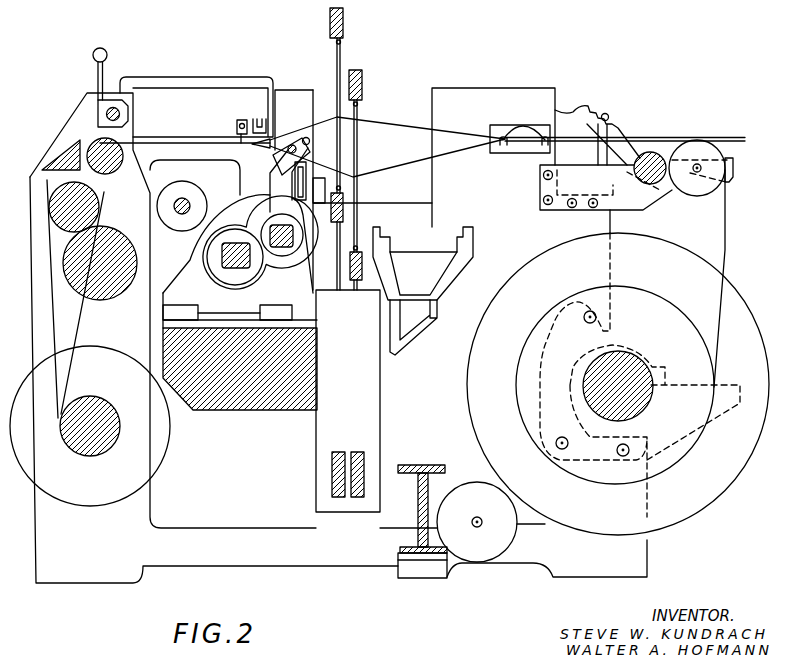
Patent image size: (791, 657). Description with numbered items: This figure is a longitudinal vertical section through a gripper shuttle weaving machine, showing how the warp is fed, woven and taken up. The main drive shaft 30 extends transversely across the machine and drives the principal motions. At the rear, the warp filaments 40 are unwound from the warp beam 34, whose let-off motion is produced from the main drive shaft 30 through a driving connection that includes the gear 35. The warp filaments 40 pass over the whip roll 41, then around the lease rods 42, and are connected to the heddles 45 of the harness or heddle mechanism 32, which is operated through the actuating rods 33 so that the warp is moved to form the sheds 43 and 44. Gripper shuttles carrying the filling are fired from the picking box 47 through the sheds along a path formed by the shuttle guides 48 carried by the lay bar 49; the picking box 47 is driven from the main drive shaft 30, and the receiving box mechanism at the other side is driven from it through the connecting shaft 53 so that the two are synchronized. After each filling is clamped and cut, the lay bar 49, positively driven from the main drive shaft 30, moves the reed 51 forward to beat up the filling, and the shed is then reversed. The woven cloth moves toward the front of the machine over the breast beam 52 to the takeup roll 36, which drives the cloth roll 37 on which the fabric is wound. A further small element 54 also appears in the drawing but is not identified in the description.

The main drive shaft 30 is at (222, 260).
The harness or heddle mechanism 32 is at (358, 70).
The actuating rods 33 is at (348, 452).
The warp beam 34 is at (633, 352).
The gear 35 is at (512, 541).
The takeup roll 36 is at (107, 298).
The cloth roll 37 is at (98, 401).
The warp filaments 40 is at (725, 226).
The whip roll 41 is at (697, 197).
The lease rods 42 is at (524, 126).
The shed 43 is at (384, 126).
The shed 44 is at (381, 170).
The heddles 45 is at (336, 63).
The picking box 47 is at (190, 115).
The shuttle guides 48 is at (274, 158).
The lay bar 49 is at (272, 184).
The reed 51 is at (305, 145).
The breast beam 52 is at (108, 176).
The connecting shaft 53 is at (190, 203).
The clip 54 is at (262, 113).